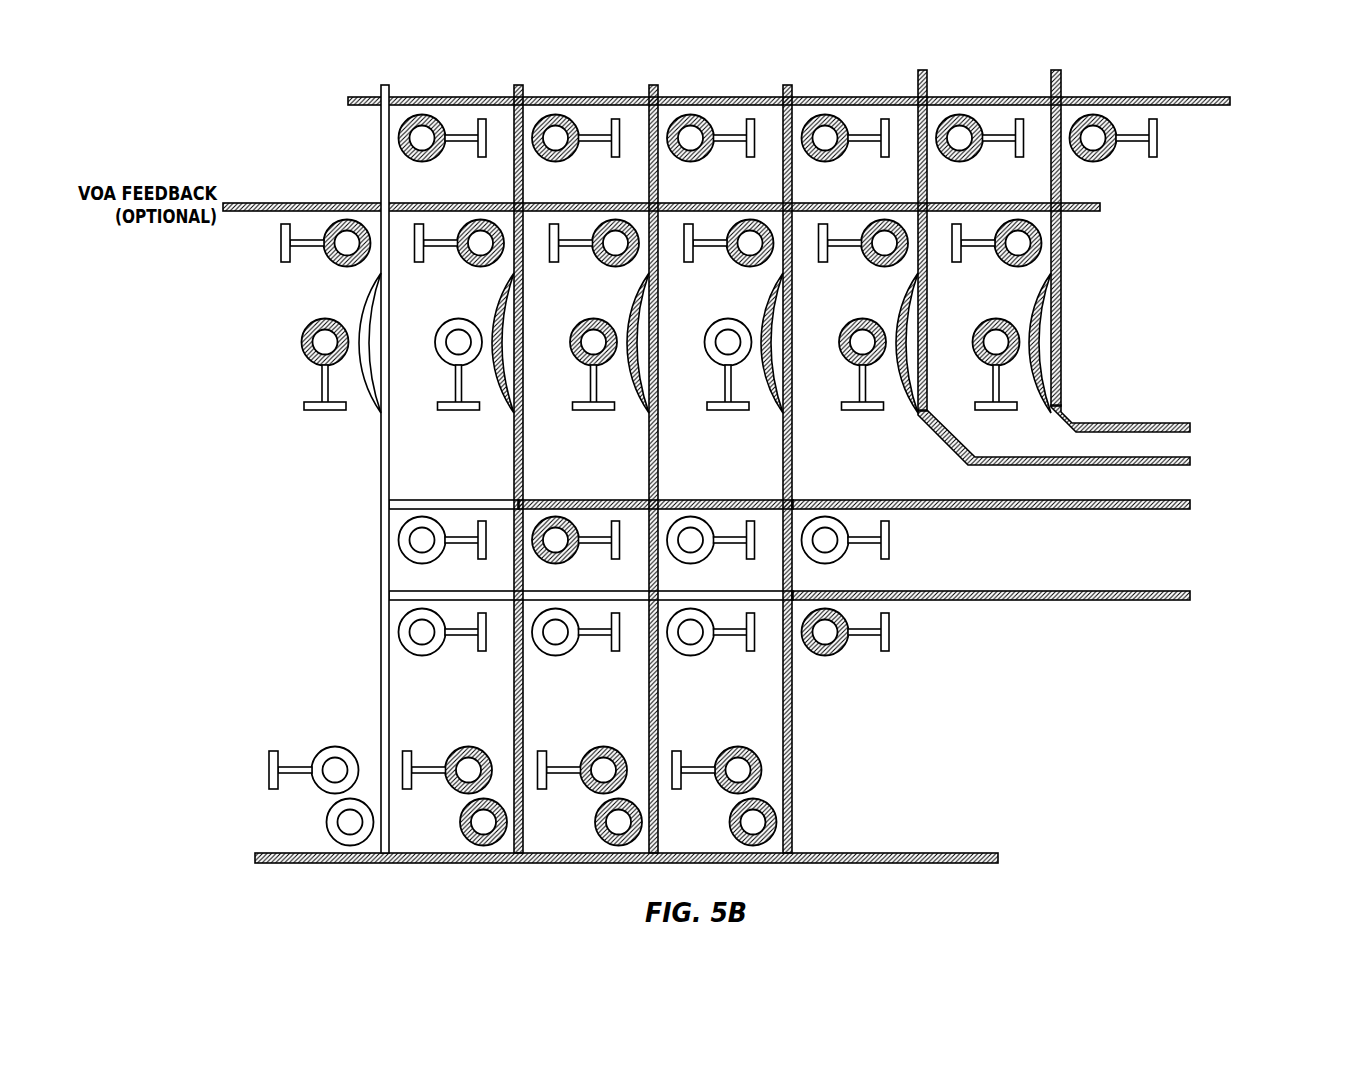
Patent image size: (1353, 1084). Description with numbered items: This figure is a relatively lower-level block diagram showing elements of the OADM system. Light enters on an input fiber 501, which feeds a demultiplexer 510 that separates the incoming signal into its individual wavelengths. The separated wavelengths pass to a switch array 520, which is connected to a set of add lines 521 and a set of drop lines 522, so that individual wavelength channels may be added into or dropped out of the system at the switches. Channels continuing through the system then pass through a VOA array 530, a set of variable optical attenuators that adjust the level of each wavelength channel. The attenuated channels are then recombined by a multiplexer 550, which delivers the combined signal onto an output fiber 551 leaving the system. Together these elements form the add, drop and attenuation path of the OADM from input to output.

The input fiber 501 is at (245, 892).
The demultiplexer 510 is at (908, 808).
The switch array 520 is at (368, 608).
The set of add lines 521 is at (1270, 458).
The set of drop lines 522 is at (1283, 562).
The VOA array 530 is at (287, 391).
The multiplexer 550 is at (368, 147).
The output fiber 551 is at (1322, 126).